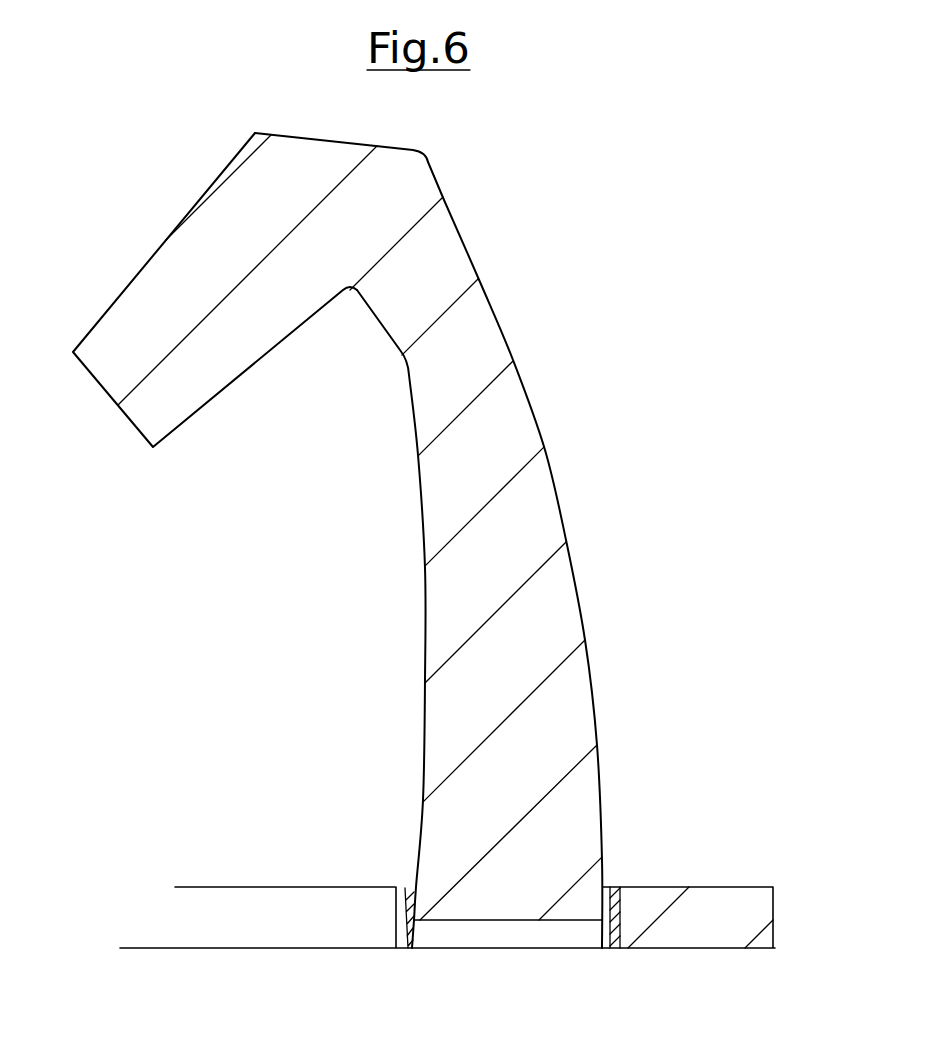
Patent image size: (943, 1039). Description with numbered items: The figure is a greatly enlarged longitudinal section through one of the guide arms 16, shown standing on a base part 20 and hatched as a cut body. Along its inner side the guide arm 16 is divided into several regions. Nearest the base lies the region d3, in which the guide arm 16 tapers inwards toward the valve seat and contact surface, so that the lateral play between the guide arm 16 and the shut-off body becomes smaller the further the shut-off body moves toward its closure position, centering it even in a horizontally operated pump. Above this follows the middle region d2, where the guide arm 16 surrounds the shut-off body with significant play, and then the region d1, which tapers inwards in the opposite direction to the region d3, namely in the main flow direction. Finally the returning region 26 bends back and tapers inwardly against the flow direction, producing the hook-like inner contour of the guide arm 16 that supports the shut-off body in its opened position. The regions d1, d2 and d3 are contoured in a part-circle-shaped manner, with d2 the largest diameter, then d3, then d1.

The guide arm 16 is at (540, 537).
The base plate 20 is at (700, 908).
The returning region 26 is at (336, 302).
The region d1 is at (398, 364).
The middle region d2 is at (409, 751).
The inwardly tapering region d3 is at (407, 746).